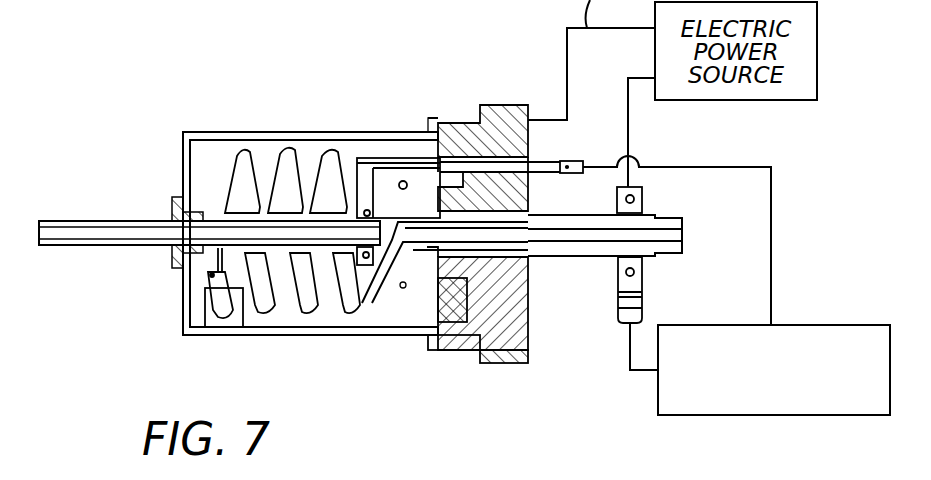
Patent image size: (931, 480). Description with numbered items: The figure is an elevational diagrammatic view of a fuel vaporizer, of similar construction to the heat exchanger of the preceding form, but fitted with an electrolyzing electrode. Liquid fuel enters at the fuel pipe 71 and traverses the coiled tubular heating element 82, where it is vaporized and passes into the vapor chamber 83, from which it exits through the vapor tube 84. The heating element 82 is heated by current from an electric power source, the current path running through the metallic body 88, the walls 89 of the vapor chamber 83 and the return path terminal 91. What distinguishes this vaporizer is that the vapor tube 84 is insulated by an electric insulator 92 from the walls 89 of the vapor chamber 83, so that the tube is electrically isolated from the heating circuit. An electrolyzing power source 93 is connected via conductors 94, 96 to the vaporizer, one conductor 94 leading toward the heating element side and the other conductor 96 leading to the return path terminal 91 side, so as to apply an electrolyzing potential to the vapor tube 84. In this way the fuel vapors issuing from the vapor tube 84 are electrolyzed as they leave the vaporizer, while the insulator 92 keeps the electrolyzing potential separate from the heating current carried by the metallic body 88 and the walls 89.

The fuel pipe 71 is at (572, 257).
The coiled tubular heating element 82 is at (287, 160).
The vapor chamber 83 is at (408, 315).
The vapor tube 84 is at (82, 246).
The metallic body 88 is at (505, 115).
The walls of vapor chamber 89 is at (240, 132).
The return path terminal 91 is at (645, 198).
The electric insulator 92 is at (172, 262).
The electrolyzing power source 93 is at (828, 325).
The conductor 94 is at (680, 165).
The conductor 96 is at (628, 370).